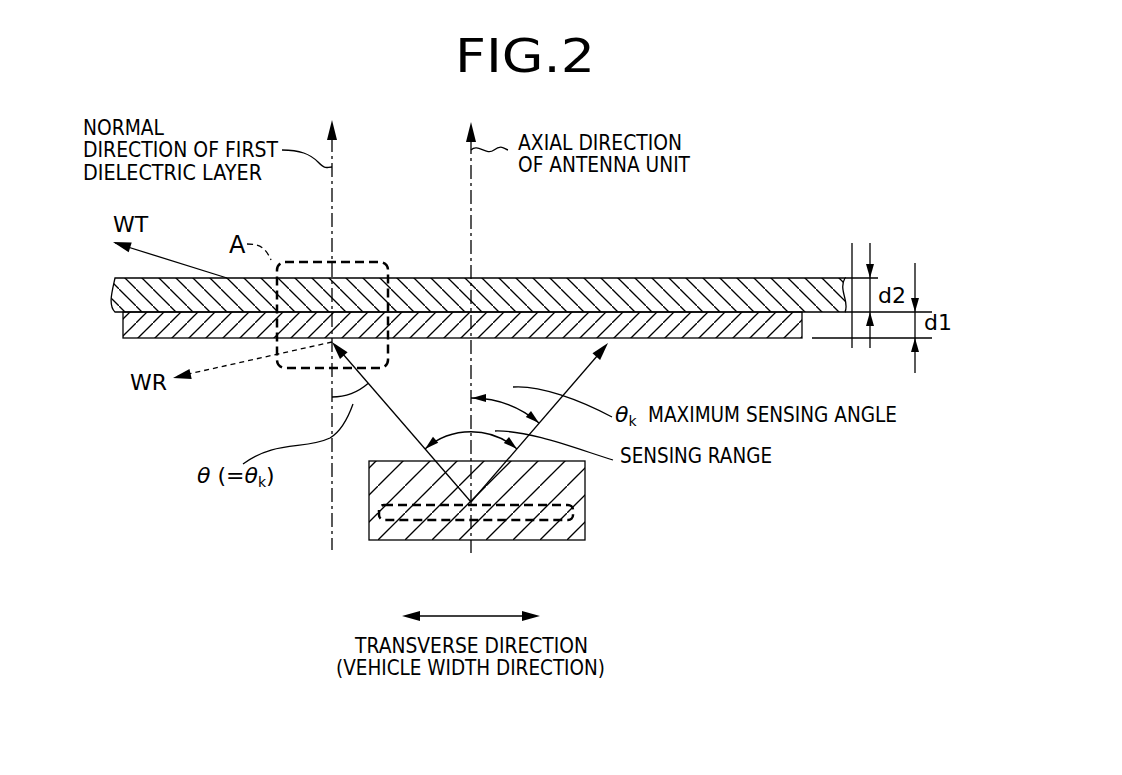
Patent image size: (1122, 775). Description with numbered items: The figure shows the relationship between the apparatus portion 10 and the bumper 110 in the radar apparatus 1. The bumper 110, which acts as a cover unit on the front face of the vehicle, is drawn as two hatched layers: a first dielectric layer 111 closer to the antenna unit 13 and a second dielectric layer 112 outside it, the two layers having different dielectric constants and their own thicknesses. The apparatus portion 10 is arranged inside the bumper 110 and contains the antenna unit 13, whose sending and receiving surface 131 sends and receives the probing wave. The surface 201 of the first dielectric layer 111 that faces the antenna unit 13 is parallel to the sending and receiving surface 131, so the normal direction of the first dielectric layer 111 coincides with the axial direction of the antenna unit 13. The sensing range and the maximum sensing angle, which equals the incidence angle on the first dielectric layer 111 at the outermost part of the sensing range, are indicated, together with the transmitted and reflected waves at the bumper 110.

The radar apparatus 1 is at (851, 166).
The apparatus portion 10 is at (503, 535).
The antenna unit 13 is at (508, 540).
The sending and receiving surface 131 is at (545, 530).
The bumper 110 is at (478, 239).
The first dielectric layer 111 is at (775, 330).
The second dielectric layer 112 is at (715, 278).
The surface 201 is at (677, 352).